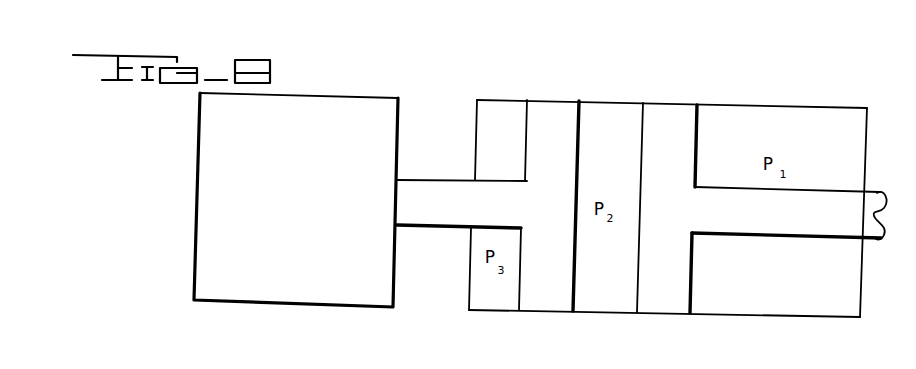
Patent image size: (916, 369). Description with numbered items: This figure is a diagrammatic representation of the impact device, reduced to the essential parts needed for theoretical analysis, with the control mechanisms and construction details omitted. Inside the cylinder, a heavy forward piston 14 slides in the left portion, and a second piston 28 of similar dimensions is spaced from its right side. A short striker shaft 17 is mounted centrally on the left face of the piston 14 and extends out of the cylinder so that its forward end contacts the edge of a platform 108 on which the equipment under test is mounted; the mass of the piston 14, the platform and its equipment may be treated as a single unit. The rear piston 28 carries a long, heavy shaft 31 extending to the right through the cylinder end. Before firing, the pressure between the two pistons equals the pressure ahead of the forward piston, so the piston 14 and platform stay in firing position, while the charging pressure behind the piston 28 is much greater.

The platform 108 is at (310, 209).
The striker shaft 17 is at (432, 190).
The piston 14 is at (557, 110).
The second piston 28 is at (675, 112).
The shaft 31 is at (755, 222).